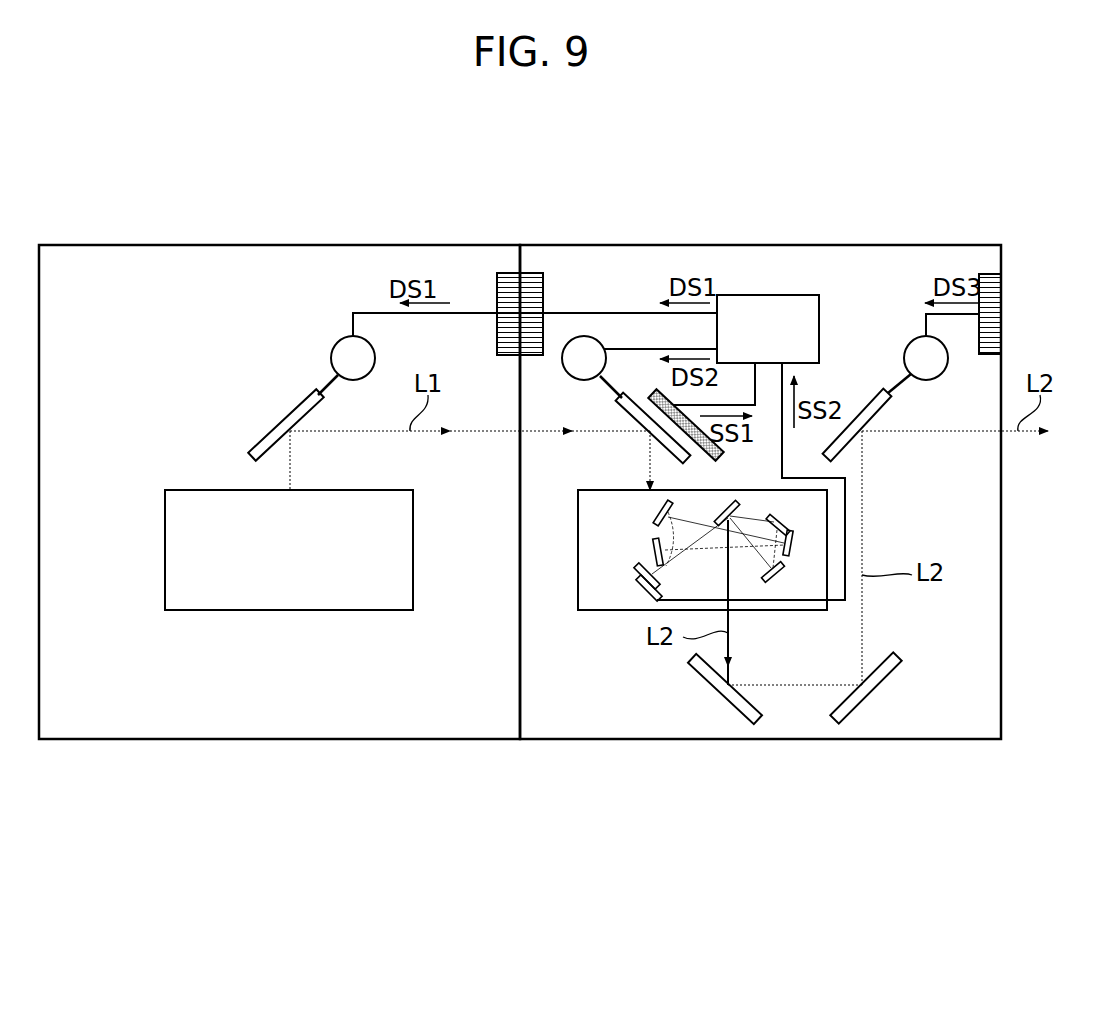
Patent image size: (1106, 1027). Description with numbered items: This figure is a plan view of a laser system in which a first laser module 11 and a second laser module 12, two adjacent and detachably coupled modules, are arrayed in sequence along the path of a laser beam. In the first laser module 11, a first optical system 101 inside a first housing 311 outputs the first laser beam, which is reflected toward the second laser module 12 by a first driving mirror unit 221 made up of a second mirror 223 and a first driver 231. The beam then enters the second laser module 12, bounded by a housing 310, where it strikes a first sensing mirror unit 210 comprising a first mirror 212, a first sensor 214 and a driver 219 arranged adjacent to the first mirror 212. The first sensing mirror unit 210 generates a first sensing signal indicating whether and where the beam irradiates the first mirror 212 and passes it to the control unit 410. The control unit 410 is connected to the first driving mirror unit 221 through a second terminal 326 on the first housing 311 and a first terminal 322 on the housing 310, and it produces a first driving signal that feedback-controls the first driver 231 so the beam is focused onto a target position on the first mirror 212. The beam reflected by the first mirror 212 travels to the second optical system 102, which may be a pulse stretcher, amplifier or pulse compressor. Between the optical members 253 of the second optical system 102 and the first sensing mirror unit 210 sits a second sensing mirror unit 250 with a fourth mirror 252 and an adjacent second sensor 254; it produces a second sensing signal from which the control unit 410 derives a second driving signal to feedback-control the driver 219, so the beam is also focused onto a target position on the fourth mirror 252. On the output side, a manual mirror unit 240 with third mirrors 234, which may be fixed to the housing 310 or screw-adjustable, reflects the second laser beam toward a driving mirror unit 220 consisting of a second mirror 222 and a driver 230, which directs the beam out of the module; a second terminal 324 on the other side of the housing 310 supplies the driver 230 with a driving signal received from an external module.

The first laser module 11 is at (279, 504).
The second laser module 12 is at (762, 504).
The first optical system 101 is at (270, 563).
The second optical system 102 is at (697, 550).
The first sensing mirror unit 210 is at (640, 300).
The first mirror 212 is at (632, 405).
The first sensor 214 is at (668, 410).
The driver 219 is at (582, 350).
The driving mirror unit 220 is at (901, 299).
The first driving mirror unit 221 is at (482, 299).
The second mirror 222 is at (870, 412).
The second mirror 223 is at (290, 420).
The driver 230 is at (916, 350).
The first driver 231 is at (352, 350).
The third mirrors 234 is at (872, 812).
The manual mirror unit 240 is at (795, 754).
The second sensing mirror unit 250 is at (609, 710).
The fourth mirror 252 is at (640, 578).
The optical members 253 is at (660, 513).
The second sensor 254 is at (648, 588).
The housing 310 is at (755, 245).
The first housing 311 is at (156, 245).
The first terminal 322 is at (532, 285).
The second terminal 324 is at (990, 331).
The second terminal 326 is at (508, 285).
The control unit 410 is at (750, 343).